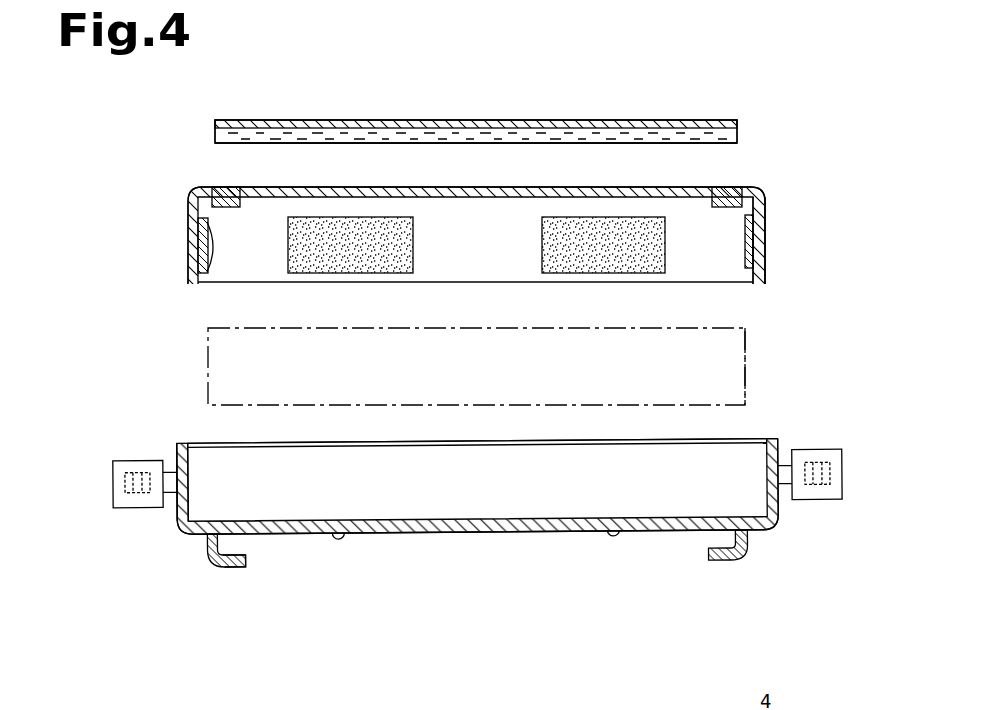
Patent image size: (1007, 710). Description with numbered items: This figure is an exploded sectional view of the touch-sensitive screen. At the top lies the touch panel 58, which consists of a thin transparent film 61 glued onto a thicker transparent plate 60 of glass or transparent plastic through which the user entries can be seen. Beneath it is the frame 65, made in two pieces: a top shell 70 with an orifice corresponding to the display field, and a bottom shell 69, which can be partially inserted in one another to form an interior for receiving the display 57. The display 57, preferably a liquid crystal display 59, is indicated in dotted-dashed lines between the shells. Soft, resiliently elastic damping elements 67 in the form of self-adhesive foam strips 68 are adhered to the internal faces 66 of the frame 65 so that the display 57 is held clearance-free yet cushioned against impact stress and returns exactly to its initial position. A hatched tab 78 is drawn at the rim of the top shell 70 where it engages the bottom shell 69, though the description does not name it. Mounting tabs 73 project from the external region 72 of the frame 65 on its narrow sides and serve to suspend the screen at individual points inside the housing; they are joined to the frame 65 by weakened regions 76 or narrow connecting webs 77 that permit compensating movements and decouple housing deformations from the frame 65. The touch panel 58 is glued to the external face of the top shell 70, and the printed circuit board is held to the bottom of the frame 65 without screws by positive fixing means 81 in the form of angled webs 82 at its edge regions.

The display 57 is at (214, 372).
The touch panel 58 is at (205, 126).
The liquid crystal display 59 is at (747, 352).
The transparent plate 60 is at (215, 141).
The transparent film 61 is at (325, 120).
The frame 65 is at (466, 361).
The internal faces 66 is at (193, 274).
The damping elements 67 is at (309, 266).
The foam strips 68 is at (350, 271).
The bottom shell 69 is at (507, 525).
The top shell 70 is at (756, 238).
The external region 72 is at (178, 525).
The mounting tabs 73 is at (116, 526).
The weakened regions 76 is at (166, 456).
The connecting webs 77 is at (172, 472).
The latching tab 78 is at (712, 197).
The positive fixing means 81 is at (205, 570).
The angled webs 82 is at (228, 568).